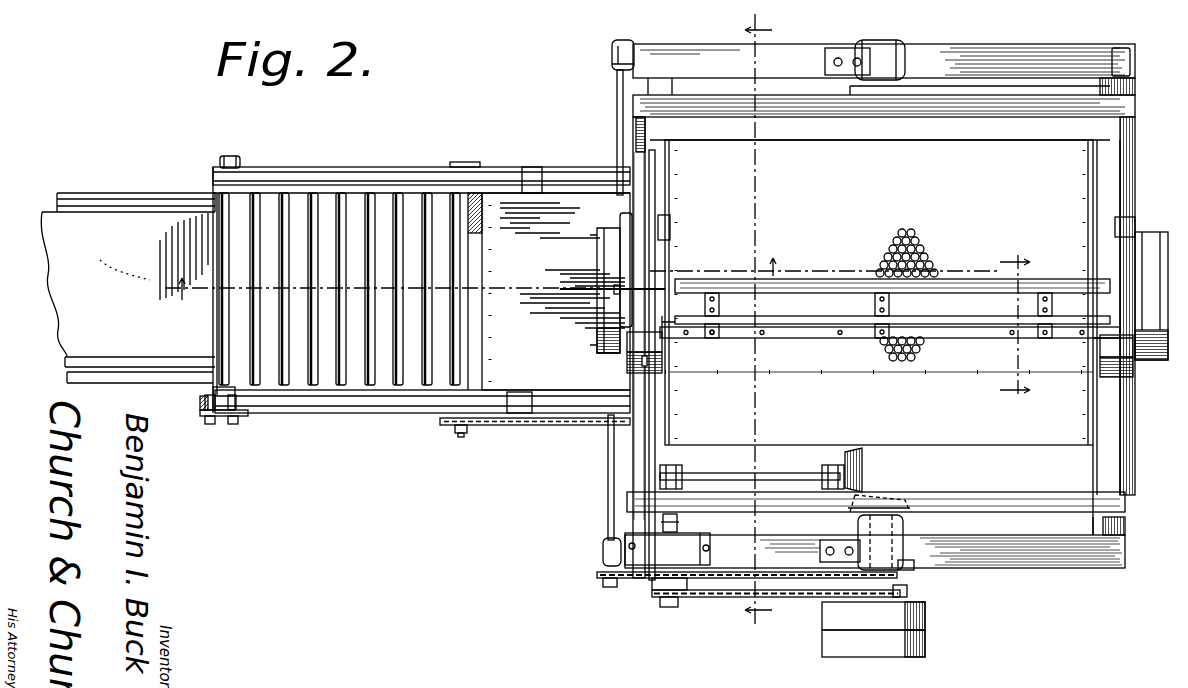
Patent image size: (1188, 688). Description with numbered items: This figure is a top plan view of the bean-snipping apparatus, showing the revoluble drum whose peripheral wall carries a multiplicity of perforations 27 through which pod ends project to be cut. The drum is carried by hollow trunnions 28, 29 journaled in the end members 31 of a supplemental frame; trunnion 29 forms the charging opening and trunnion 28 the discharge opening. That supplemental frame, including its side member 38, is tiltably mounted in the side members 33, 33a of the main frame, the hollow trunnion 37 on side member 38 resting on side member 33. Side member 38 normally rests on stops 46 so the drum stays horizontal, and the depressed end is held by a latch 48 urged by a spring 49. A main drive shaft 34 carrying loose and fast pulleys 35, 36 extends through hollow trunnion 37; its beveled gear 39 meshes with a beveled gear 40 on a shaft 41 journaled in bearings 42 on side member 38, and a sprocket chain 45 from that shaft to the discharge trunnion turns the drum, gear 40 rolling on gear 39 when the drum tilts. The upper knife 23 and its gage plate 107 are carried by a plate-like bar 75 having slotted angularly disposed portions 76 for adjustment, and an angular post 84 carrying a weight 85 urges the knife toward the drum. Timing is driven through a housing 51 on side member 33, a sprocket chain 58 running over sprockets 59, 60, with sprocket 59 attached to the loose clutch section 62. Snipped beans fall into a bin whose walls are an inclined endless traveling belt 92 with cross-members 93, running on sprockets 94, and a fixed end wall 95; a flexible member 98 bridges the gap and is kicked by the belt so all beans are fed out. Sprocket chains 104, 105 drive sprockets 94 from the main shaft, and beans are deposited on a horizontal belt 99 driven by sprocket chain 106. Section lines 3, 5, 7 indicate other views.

The horizontally disposed belt 99 is at (128, 288).
The inclined endless traveling belt 92 is at (384, 196).
The cross-members 93 is at (397, 387).
The end wall 95 is at (549, 291).
The flexible member 98 is at (473, 322).
The sprocket chain 104 is at (548, 428).
The sprocket chain 106 is at (245, 416).
The sprockets 94 is at (215, 422).
The side member of main frame 33a is at (1032, 40).
The side member of supplemental frame 38 is at (1092, 120).
The stops 46 is at (1135, 86).
The end members of supplemental frame 31 is at (633, 128).
The hollow trunnion 37 is at (1127, 172).
The perforations 27 is at (835, 153).
The hollow trunnion 28 is at (610, 238).
The sprocket chain 45 is at (670, 222).
The gage plate 107 is at (824, 282).
The upper knife 23 is at (826, 322).
The angularly disposed portions 76 is at (787, 338).
The bar 75 is at (838, 338).
The weight 85 is at (665, 347).
The angular post 84 is at (605, 318).
The hollow trunnion 29 is at (1155, 246).
The shaft 41 is at (772, 478).
The bearings 42 is at (688, 468).
The beveled gear 40 is at (866, 464).
The latch 48 is at (678, 518).
The spring 49 is at (679, 528).
The beveled gear 39 is at (885, 497).
The side member of main frame 33 is at (975, 570).
The housing 51 is at (667, 549).
The main drive shaft 34 is at (908, 570).
The sprocket 60 is at (908, 593).
The sprocket chain 58 is at (795, 590).
The sprocket 59 is at (660, 600).
The clutch section 62 is at (680, 592).
The sprocket chain 105 is at (838, 597).
The fast drive pulley 36 is at (928, 615).
The loose drive pulley 35 is at (928, 638).
The section line 3 is at (756, 325).
The section line 5 is at (580, 280).
The section line 7 is at (1015, 325).